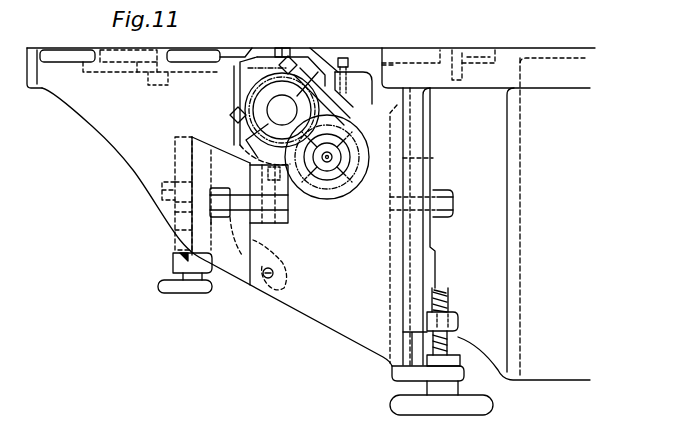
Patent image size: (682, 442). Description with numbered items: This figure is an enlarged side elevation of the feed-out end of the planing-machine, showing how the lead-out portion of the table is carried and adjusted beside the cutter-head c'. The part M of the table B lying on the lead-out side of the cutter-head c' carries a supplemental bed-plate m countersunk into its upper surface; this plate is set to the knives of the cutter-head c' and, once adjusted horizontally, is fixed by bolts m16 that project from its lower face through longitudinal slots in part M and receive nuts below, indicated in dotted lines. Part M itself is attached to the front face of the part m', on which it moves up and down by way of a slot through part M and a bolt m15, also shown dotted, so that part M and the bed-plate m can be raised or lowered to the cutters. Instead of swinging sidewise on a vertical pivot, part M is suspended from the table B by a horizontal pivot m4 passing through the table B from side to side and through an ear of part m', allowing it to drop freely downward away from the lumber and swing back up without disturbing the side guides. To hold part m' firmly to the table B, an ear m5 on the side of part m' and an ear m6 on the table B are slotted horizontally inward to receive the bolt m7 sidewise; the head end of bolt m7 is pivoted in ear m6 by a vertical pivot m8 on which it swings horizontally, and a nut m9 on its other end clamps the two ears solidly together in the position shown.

The table B is at (311, 58).
The part of the table M is at (217, 226).
The post W is at (524, 219).
The cutter-head c' is at (301, 112).
The supplemental bed-plate m is at (130, 52).
The part m' is at (195, 215).
The horizontal pivot m4 is at (274, 273).
The ear m5 is at (237, 236).
The ear m6 is at (280, 204).
The bolt m7 is at (289, 205).
The vertical pivot m8 is at (268, 224).
The nut m9 is at (207, 229).
The bolt m15 is at (165, 188).
The bolts m16 is at (166, 85).